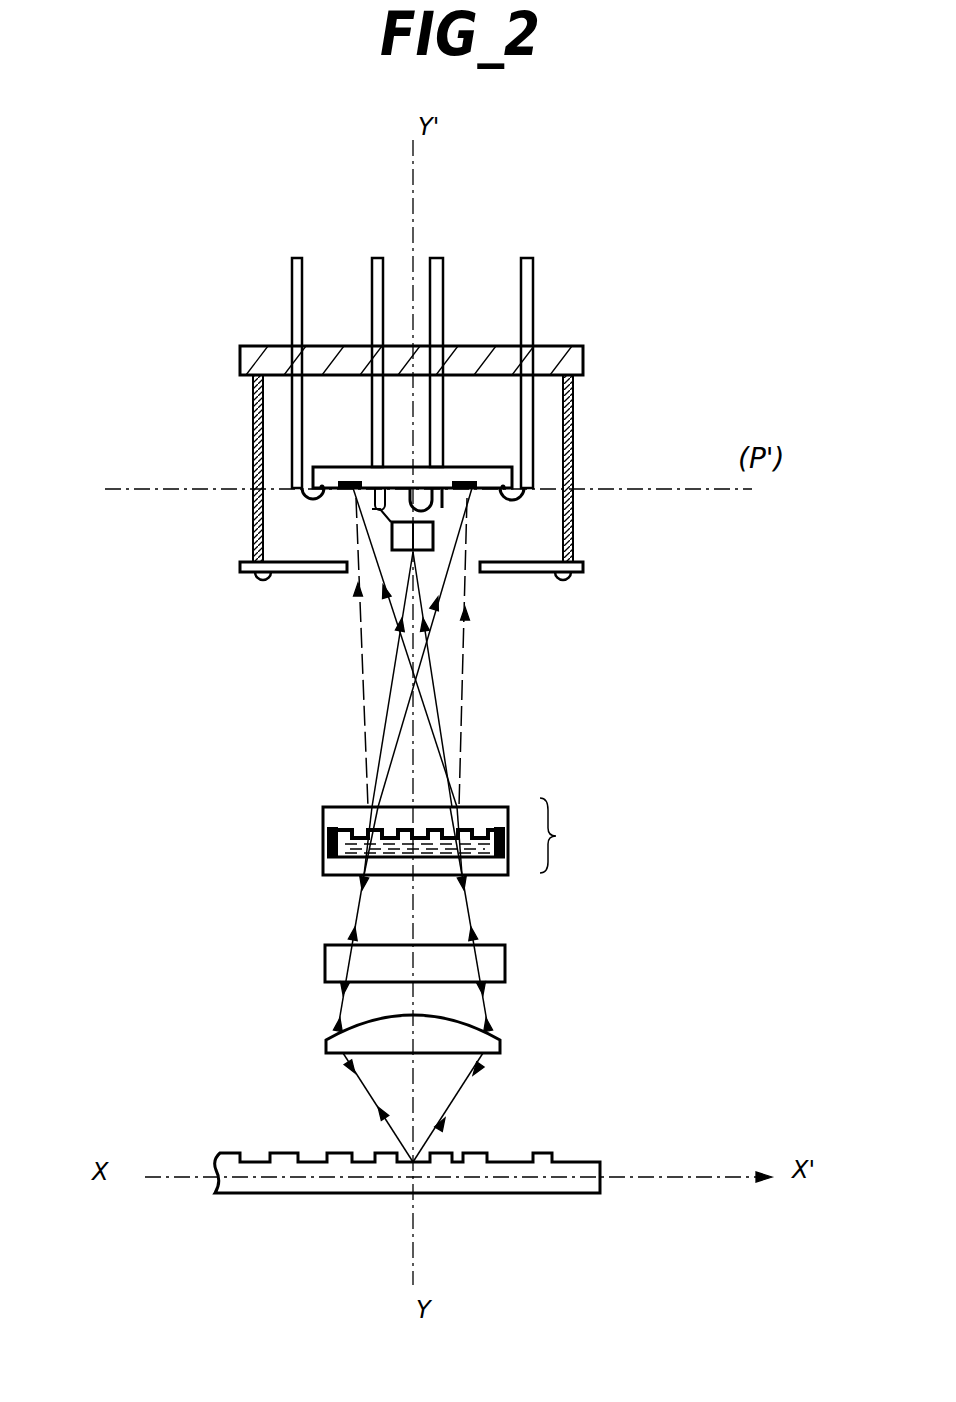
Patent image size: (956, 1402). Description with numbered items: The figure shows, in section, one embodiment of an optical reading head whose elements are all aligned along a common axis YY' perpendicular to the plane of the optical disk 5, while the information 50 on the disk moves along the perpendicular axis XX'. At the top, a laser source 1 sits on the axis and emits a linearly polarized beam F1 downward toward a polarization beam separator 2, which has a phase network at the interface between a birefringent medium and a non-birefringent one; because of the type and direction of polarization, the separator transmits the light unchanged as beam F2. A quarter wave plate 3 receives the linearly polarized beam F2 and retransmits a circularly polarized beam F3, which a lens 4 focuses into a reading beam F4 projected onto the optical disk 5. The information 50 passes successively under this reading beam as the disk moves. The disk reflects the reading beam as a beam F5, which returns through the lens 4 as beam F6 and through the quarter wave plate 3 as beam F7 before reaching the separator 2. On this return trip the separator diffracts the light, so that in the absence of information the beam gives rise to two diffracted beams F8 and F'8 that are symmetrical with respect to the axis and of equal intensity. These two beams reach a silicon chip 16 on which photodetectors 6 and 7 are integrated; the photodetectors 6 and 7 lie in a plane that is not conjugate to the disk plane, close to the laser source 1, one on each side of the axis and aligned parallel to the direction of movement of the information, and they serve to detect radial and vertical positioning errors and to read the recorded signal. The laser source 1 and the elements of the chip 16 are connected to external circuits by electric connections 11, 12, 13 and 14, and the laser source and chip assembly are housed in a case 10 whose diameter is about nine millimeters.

The laser source 1 is at (430, 530).
The polarization beam separator 2 is at (452, 836).
The quarter wave plate 3 is at (508, 968).
The lens 4 is at (500, 1043).
The optical disk 5 is at (570, 1168).
The information 50 is at (400, 1163).
The photodetector 6 is at (346, 467).
The photodetector 7 is at (468, 467).
The case 10 is at (574, 437).
The electric connection 11 is at (535, 302).
The electric connection 12 is at (443, 302).
The electric connection 13 is at (372, 302).
The electric connection 14 is at (292, 302).
The chip 16 is at (428, 482).
The linearly polarized light beam F1 is at (412, 642).
The beam retransmitted by separator F2 is at (468, 902).
The circularly polarized beam F3 is at (487, 1005).
The reading beam F4 is at (463, 1093).
The reflected beam F5 is at (363, 1090).
The return beam through lens F6 is at (343, 1003).
The return beam through quarter wave plate F7 is at (360, 902).
The diffracted beam F8 is at (376, 622).
The diffracted beam F'8 is at (488, 679).